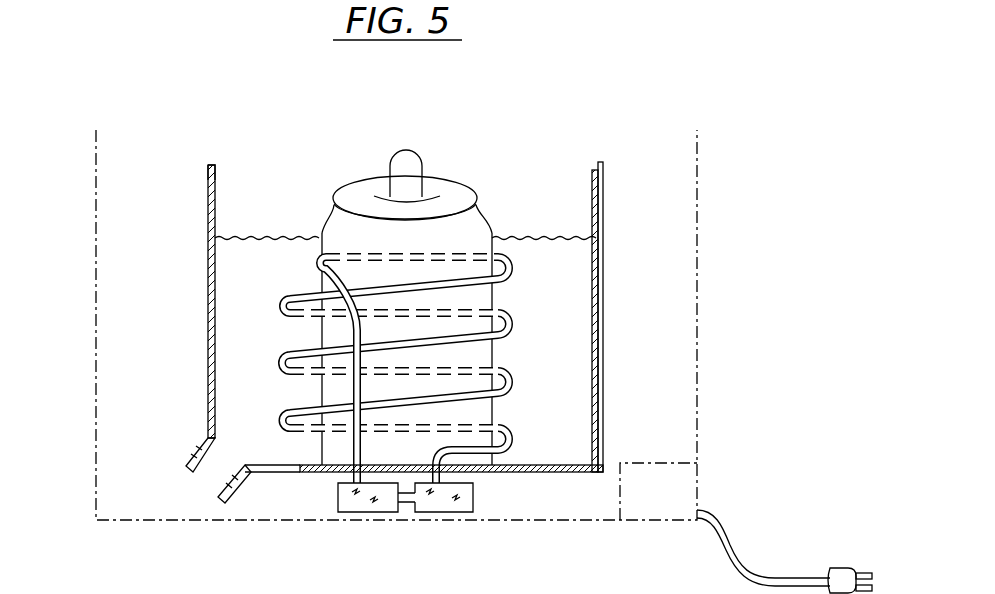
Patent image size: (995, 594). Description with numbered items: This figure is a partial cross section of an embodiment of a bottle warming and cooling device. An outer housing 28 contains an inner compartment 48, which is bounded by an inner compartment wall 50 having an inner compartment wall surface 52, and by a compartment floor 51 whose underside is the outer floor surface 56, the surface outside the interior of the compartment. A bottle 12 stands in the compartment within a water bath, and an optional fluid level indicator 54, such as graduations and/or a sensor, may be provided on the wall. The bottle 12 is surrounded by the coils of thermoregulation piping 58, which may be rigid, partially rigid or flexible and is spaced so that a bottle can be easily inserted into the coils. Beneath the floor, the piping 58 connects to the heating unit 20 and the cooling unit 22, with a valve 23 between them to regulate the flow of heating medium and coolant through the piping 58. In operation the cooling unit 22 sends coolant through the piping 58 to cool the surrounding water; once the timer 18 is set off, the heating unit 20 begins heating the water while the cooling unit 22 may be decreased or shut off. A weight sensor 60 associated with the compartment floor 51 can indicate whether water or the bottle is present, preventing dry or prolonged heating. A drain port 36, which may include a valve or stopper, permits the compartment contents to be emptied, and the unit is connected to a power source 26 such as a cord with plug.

The bottle 12 is at (450, 180).
The timer 18 is at (685, 490).
The heating unit 20 is at (370, 513).
The cooling unit 22 is at (452, 513).
The valve 23 is at (402, 503).
The power source 26 is at (780, 577).
The outer housing 28 is at (697, 272).
The drain port 36 is at (210, 477).
The inner compartment 48 is at (163, 215).
The inner compartment wall 50 is at (208, 305).
The compartment floor 51 is at (275, 465).
The inner compartment wall surface 52 is at (215, 164).
The fluid level indicator 54 is at (598, 172).
The outer floor surface 56 is at (280, 473).
The thermoregulation piping 58 is at (482, 303).
The weight sensor 60 is at (495, 472).